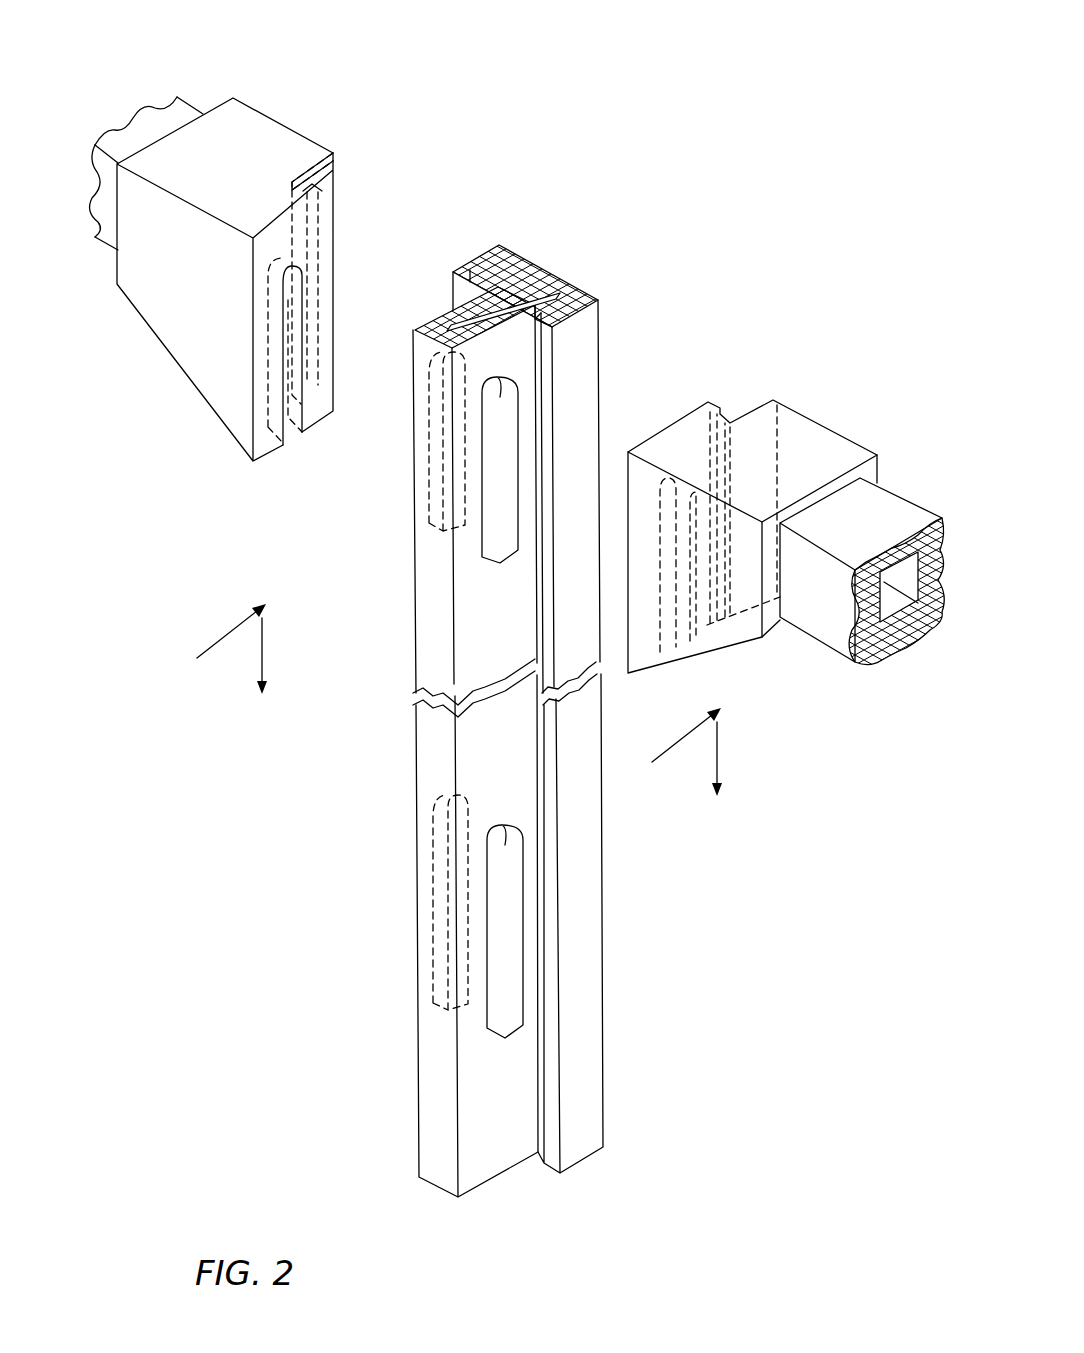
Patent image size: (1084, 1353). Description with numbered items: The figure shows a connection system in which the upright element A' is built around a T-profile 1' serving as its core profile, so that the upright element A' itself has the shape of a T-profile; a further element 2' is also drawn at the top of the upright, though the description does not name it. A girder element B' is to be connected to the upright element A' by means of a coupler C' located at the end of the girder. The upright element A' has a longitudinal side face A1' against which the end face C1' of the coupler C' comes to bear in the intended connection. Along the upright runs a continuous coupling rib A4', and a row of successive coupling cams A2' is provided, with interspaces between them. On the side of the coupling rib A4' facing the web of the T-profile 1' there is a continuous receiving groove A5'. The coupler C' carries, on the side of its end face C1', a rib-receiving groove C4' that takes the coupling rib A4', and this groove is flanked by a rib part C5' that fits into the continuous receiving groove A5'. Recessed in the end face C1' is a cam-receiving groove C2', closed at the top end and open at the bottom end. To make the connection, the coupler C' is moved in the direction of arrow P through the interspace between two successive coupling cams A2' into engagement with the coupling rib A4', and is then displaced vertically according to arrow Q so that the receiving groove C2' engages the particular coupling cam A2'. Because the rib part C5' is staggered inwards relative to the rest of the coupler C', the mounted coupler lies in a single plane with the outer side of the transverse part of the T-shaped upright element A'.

The coupler C' is at (264, 240).
The end face C1' is at (344, 334).
The receiving groove C2' is at (231, 355).
The rib-receiving groove C4' is at (351, 260).
The rib part C5' is at (354, 277).
The girder element B' is at (517, 409).
The upright element A' is at (493, 711).
The longitudinal side face A1' is at (475, 742).
The coupling cam A2' is at (436, 495).
The continuous coupling rib A4' is at (550, 709).
The continuous receiving groove A5' is at (583, 336).
The T-profile 1' is at (524, 278).
The tenon 2' is at (572, 278).
The arrow P is at (446, 693).
The arrow Q is at (503, 713).